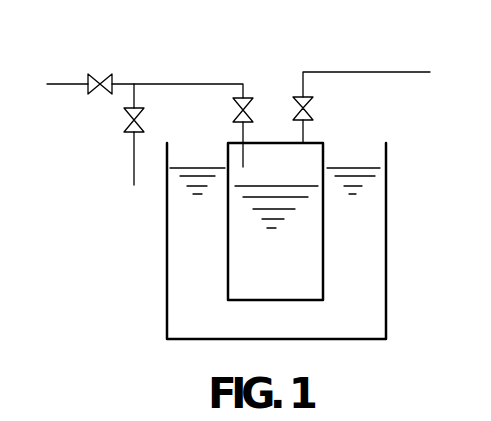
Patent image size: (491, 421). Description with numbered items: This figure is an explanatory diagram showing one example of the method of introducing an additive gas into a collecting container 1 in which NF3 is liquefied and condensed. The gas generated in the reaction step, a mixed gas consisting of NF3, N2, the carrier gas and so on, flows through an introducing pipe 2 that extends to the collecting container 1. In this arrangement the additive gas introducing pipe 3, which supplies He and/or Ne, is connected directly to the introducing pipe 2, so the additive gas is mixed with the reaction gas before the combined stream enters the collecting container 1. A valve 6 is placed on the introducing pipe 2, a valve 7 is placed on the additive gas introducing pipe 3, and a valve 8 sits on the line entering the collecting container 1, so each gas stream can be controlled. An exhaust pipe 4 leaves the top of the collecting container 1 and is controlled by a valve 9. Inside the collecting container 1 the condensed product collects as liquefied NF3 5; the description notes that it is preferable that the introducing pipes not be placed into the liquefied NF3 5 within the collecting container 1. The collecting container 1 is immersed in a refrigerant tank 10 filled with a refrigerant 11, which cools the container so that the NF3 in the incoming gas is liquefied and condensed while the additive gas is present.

The collecting container 1 is at (326, 163).
The introducing pipe of the gas generated in the reaction step 2 is at (67, 83).
The additive gas introducing pipe 3 is at (132, 172).
The exhaust pipe 4 is at (410, 73).
The liquefied NF3 5 is at (240, 233).
The valve 6 is at (108, 77).
The valve 7 is at (125, 123).
The valve 8 is at (233, 112).
The valve 9 is at (311, 117).
The refrigerant tank 10 is at (385, 237).
The refrigerant 11 is at (375, 308).